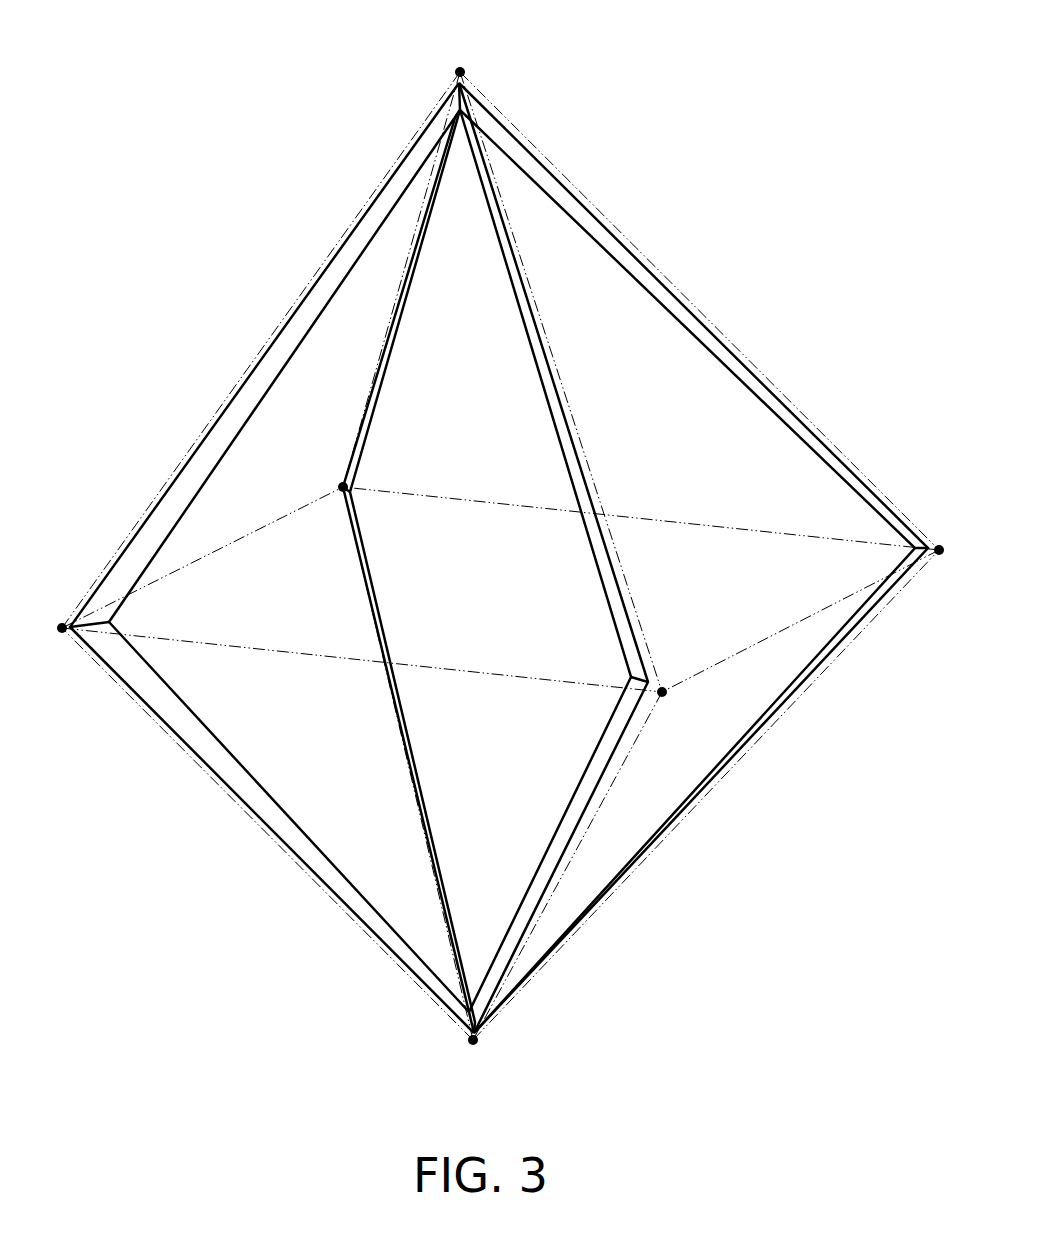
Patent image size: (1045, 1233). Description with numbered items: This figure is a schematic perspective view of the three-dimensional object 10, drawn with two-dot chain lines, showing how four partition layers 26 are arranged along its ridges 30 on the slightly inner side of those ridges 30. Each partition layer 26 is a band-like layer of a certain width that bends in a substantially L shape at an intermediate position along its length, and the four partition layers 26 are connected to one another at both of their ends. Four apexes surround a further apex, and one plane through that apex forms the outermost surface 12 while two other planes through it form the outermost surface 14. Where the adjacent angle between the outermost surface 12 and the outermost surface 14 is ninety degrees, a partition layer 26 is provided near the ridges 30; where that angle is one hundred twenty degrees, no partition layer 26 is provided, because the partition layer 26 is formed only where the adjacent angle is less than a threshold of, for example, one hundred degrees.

The three-dimensional object 10 is at (250, 43).
The outermost surface 12 is at (370, 267).
The outermost surface 14 is at (350, 312).
The partition layer 26 is at (275, 358).
The ridge 30 is at (622, 230).